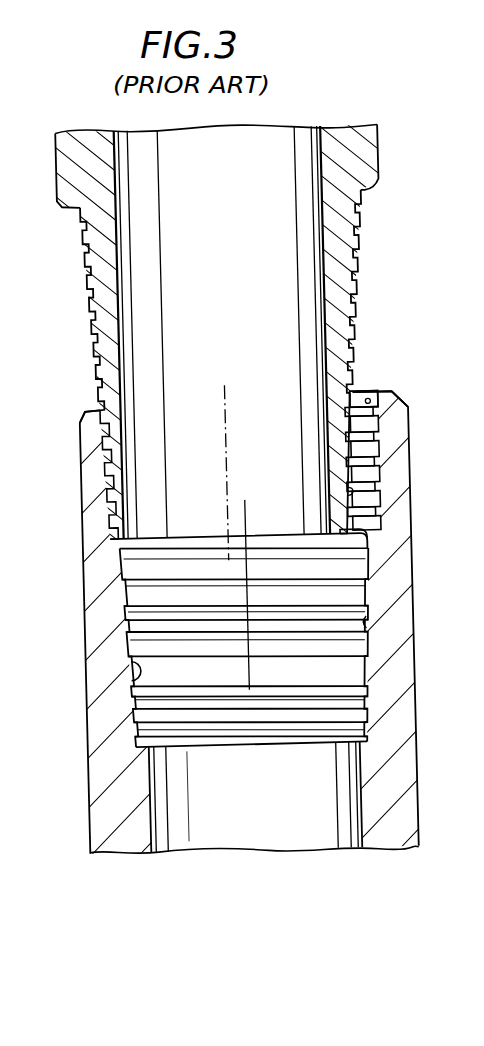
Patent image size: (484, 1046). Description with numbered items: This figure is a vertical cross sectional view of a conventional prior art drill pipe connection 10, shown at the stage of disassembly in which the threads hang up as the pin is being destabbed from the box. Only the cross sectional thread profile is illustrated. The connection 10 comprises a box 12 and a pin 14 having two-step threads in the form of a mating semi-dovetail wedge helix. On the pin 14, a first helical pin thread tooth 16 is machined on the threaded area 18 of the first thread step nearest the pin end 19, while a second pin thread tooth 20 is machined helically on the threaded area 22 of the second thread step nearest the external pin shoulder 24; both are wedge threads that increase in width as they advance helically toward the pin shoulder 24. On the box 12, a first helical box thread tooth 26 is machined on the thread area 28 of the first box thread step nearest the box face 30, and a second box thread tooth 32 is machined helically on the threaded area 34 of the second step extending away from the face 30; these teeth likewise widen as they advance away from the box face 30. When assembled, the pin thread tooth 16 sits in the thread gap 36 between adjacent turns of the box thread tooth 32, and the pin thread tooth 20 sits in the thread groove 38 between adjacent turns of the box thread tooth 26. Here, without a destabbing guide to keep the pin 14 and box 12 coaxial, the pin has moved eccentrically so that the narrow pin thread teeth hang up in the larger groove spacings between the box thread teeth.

The drill pipe connection 10 is at (433, 549).
The box 12 is at (90, 481).
The pin 14 is at (113, 277).
The first helical pin thread tooth 16 is at (348, 495).
The threaded area of first pin thread step 18 is at (306, 441).
The pin end 19 is at (368, 531).
The second pin thread tooth 20 is at (358, 333).
The threaded area of second pin thread step 22 is at (373, 259).
The external pin shoulder 24 is at (370, 197).
The first helical box thread tooth 26 is at (373, 399).
The thread area of first box thread step 28 is at (85, 438).
The box face 30 is at (393, 392).
The second box thread tooth 32 is at (370, 625).
The threaded area of second box thread step 34 is at (138, 668).
The thread gap 36 is at (373, 653).
The thread groove 38 is at (379, 478).